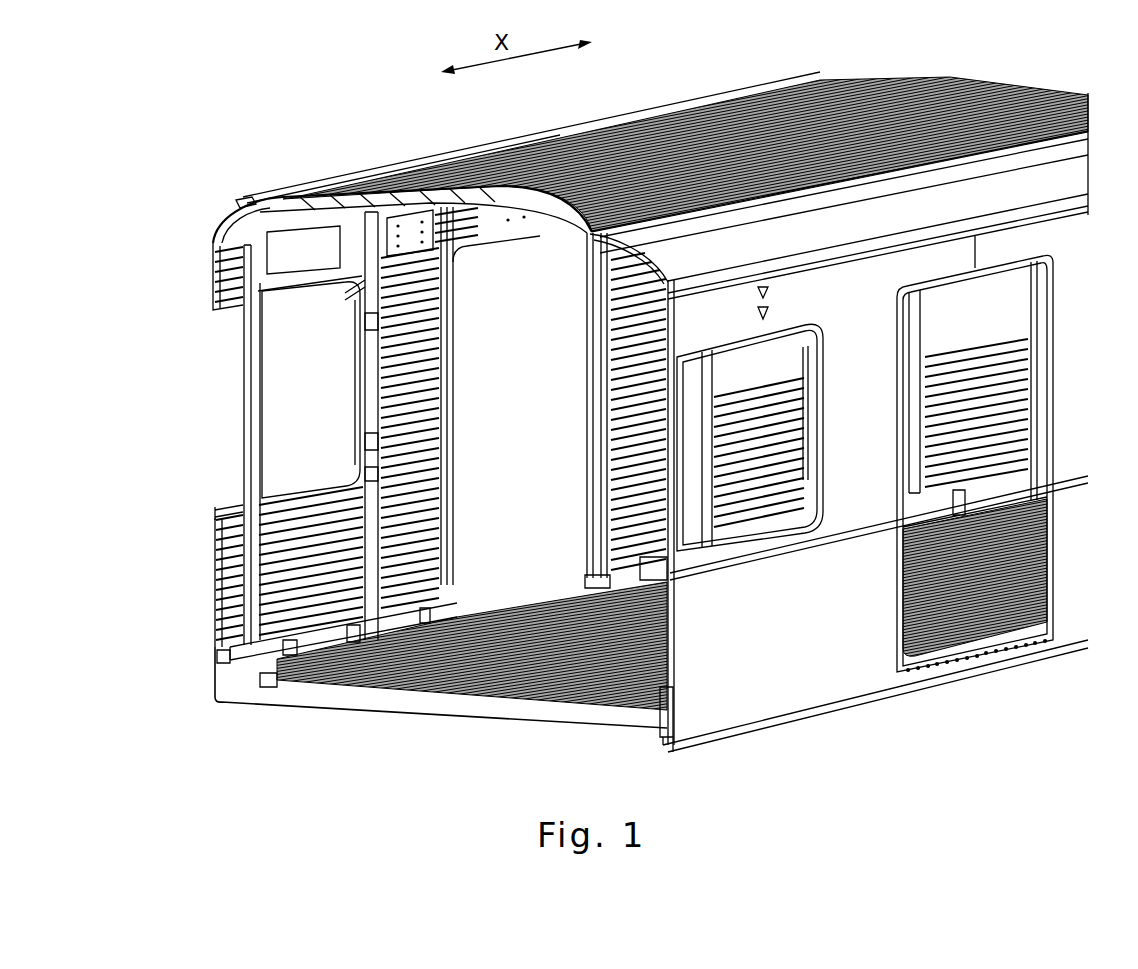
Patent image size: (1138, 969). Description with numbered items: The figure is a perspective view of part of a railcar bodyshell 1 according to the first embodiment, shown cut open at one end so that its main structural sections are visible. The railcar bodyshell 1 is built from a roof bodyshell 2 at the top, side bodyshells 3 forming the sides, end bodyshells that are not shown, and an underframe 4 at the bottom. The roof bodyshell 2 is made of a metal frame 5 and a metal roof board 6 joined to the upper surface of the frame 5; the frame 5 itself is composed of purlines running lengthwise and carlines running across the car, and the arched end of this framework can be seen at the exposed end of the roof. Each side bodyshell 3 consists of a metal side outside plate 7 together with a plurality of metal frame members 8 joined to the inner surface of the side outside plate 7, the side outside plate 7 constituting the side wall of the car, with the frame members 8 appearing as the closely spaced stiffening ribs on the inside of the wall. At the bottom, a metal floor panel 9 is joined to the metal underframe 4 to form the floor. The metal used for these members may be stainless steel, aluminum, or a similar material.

The railcar bodyshell 1 is at (239, 146).
The roof bodyshell 2 is at (946, 78).
The side bodyshell 3 is at (215, 575).
The underframe 4 is at (410, 697).
The frame 5 is at (240, 207).
The roof board 6 is at (413, 170).
The side outside plate 7 is at (213, 518).
The frame member 8 is at (222, 620).
The floor panel 9 is at (583, 703).